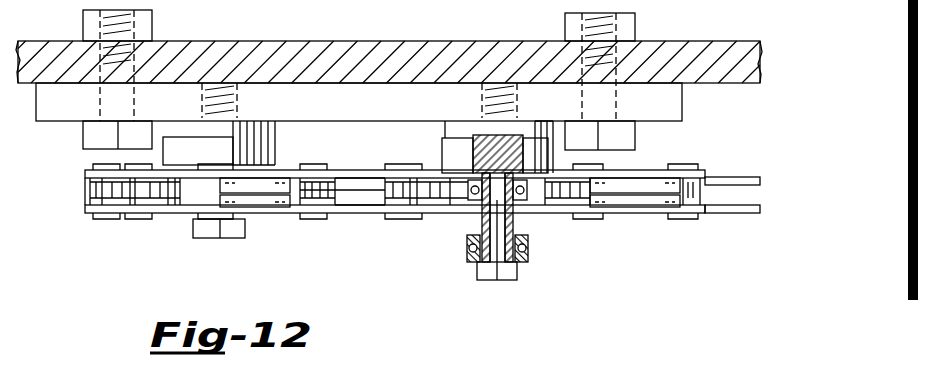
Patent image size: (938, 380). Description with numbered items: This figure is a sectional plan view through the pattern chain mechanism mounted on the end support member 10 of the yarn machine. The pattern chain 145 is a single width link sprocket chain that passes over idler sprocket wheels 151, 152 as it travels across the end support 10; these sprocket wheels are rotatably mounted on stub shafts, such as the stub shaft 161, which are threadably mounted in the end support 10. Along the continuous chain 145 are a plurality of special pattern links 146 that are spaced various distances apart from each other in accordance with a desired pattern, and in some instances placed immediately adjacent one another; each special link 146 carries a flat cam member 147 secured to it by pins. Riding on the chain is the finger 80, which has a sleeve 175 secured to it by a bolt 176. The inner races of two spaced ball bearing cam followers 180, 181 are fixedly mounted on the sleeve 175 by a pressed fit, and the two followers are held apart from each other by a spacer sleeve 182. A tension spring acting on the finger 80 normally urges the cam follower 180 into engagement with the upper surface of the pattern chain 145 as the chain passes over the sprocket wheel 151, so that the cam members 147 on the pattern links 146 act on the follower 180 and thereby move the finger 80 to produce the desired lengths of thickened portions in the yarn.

The end support member 10 is at (428, 30).
The finger 80 is at (478, 152).
The pattern chain 145 is at (86, 213).
The special pattern links 146 is at (293, 176).
The flat cam members 147 is at (290, 210).
The idler sprocket wheel 151 is at (437, 190).
The idler sprocket wheel 152 is at (90, 192).
The stub shaft 161 is at (230, 238).
The sleeve 175 is at (520, 226).
The bolt 176 is at (505, 282).
The ball bearing cam follower 180 is at (520, 185).
The ball bearing cam follower 181 is at (528, 255).
The spacer sleeve 182 is at (478, 225).